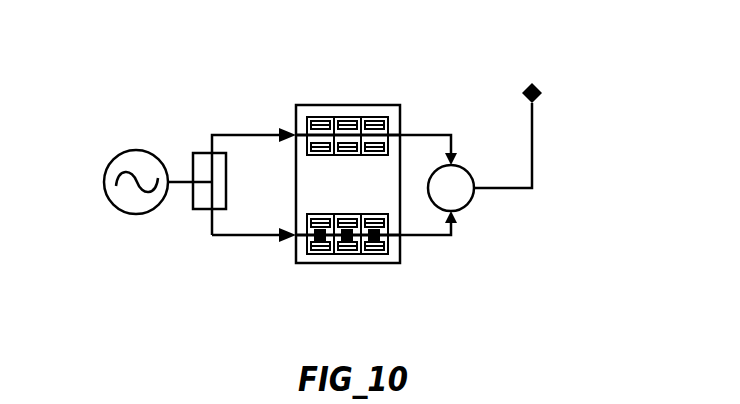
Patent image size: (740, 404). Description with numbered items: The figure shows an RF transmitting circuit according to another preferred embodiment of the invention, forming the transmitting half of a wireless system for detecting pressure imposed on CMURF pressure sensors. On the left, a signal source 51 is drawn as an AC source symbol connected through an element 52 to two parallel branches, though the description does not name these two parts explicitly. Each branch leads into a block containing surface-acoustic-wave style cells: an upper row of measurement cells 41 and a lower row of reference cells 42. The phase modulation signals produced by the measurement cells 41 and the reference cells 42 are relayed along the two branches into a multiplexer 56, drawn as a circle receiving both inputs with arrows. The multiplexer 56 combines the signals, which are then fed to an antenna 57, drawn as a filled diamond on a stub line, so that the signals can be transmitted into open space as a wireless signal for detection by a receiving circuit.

The signal source 51 is at (132, 152).
The impedance element 52 is at (200, 160).
The measurement cells 41 is at (350, 128).
The reference cells 42 is at (358, 247).
The multiplexer 56 is at (457, 192).
The antenna 57 is at (542, 103).